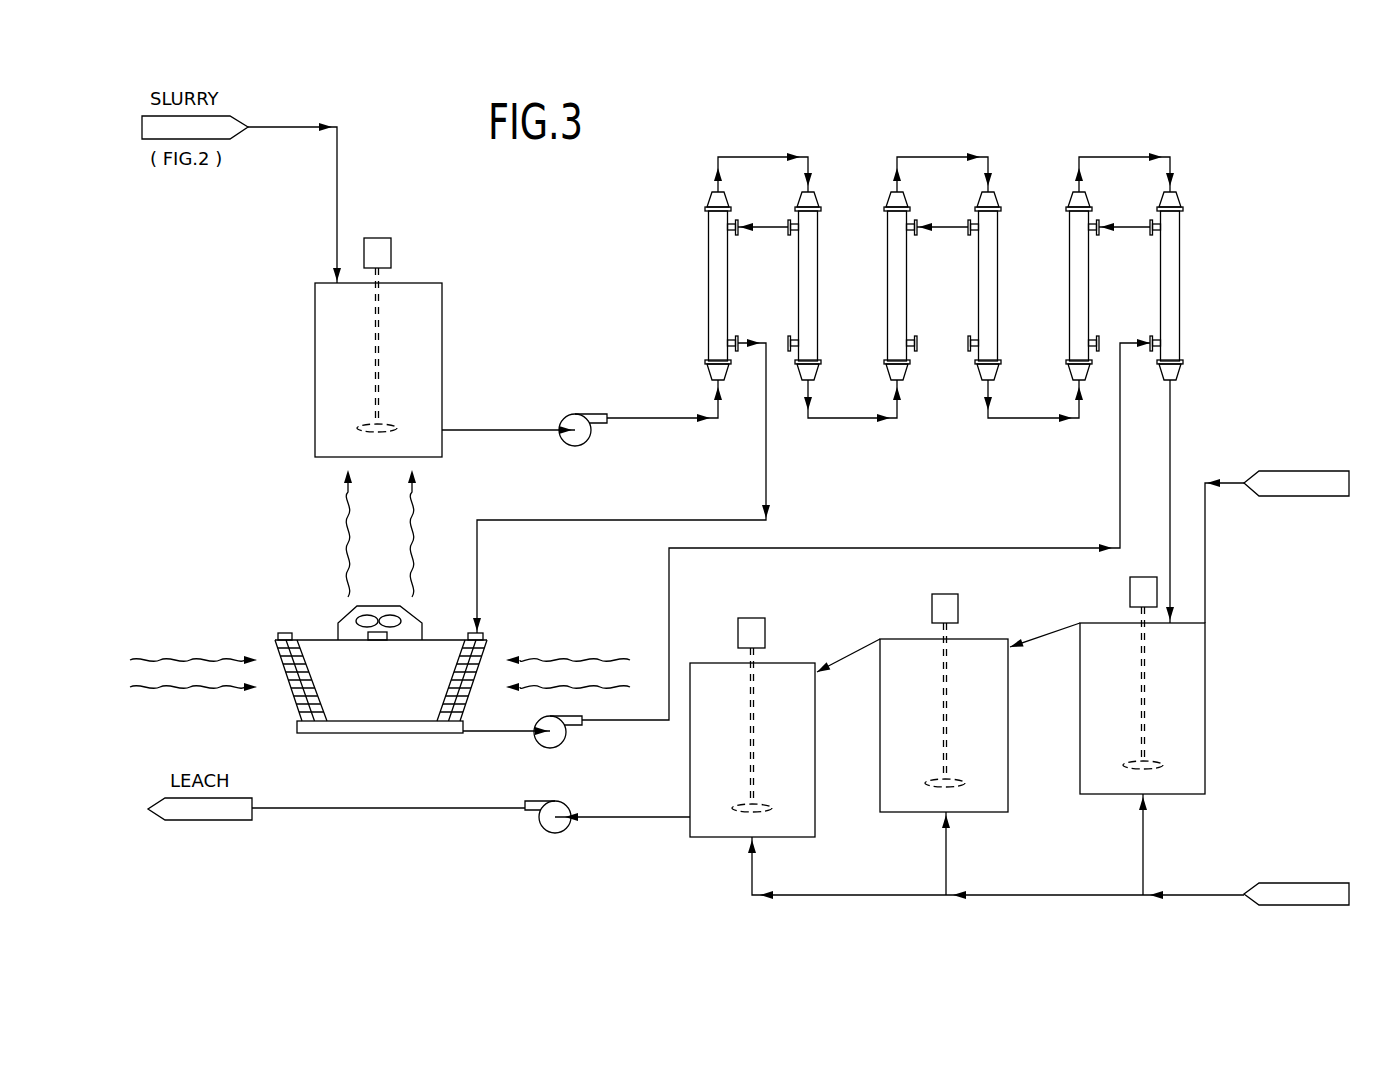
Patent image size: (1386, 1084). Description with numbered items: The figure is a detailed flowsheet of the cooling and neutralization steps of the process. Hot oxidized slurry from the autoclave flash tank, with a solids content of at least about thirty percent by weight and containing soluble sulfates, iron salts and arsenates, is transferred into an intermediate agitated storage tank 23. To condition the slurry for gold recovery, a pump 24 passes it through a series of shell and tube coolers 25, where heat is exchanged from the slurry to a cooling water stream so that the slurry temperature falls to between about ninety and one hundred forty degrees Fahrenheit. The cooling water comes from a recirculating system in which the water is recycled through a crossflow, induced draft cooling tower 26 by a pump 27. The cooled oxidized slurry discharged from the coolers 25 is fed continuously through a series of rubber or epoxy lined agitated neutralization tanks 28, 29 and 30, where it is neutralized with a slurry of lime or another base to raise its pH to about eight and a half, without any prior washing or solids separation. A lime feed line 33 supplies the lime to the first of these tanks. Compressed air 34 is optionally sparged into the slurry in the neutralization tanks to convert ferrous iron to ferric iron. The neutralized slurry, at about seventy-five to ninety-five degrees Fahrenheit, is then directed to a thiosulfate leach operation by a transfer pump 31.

The intermediate agitated storage tank 23 is at (442, 283).
The pump 24 is at (583, 446).
The shell and tube coolers 25 is at (705, 206).
The crossflow, induced draft cooling tower 26 is at (487, 636).
The pump 27 is at (556, 748).
The agitated neutralization tank 28 is at (1090, 617).
The agitated neutralization tank 29 is at (890, 637).
The agitated neutralization tank 30 is at (697, 660).
The transfer pump 31 is at (532, 836).
The lime feed line 33 is at (1207, 540).
The compressed air 34 is at (1168, 858).